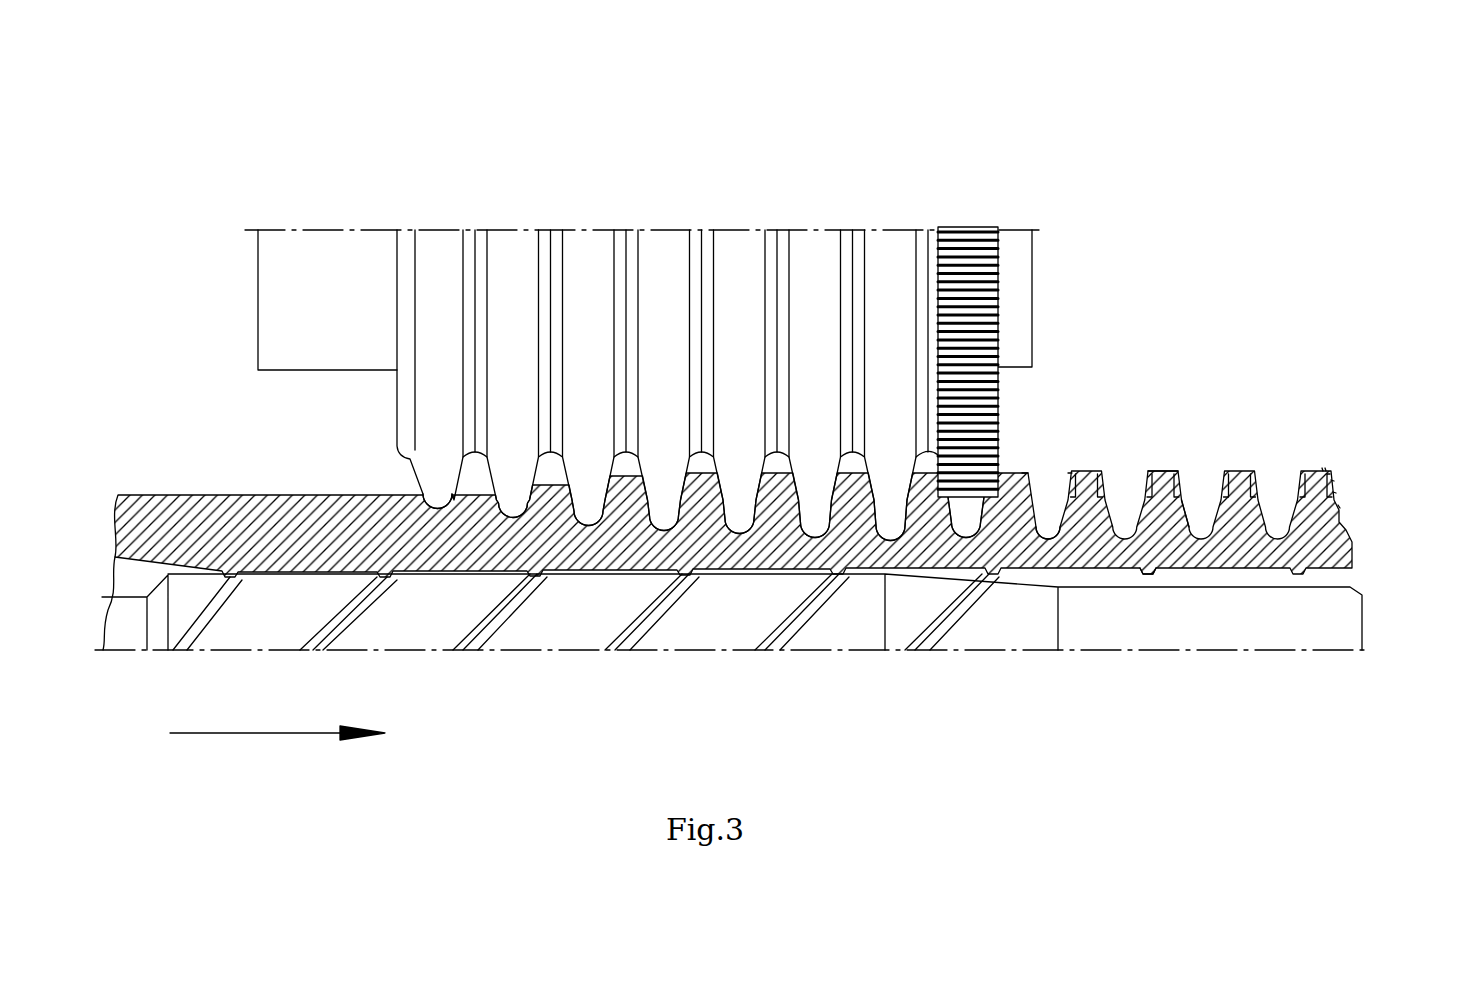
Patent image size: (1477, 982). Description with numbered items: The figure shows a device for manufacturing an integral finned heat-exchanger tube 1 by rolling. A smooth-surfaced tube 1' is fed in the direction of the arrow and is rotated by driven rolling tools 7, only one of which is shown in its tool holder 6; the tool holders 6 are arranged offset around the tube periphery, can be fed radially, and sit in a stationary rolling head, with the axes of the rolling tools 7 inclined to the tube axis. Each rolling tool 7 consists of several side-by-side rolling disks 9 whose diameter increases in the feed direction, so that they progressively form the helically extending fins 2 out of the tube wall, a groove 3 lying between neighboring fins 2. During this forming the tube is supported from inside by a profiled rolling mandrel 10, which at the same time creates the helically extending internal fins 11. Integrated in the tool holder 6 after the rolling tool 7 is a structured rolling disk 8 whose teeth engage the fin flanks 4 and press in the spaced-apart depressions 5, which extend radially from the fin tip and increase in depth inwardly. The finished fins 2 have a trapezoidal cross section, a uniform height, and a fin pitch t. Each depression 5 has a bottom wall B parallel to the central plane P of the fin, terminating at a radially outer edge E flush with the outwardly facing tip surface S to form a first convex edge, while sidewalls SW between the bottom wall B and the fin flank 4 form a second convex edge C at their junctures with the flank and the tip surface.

The finned tube 1 is at (1216, 382).
The smooth-surfaced tube 1' is at (792, 545).
The fins 2 is at (1172, 478).
The groove 3 is at (1122, 490).
The fin flanks 4 is at (1065, 530).
The depressions 5 is at (1070, 473).
The tool holder 6 is at (315, 258).
The rolling tool 7 is at (644, 306).
The structured rolling disk 8 is at (972, 284).
The rolling disks 9 is at (597, 257).
The profiled rolling mandrel 10 is at (963, 635).
The helically extending fins 11 is at (1150, 576).
The fin pitch t is at (1313, 428).
The central plane P is at (1325, 468).
The radially outwardly facing surface S is at (1322, 468).
The first convex edge E is at (1330, 474).
The bottom wall B is at (1333, 481).
The second convex edge C is at (1336, 493).
The sidewalls SW is at (1340, 507).